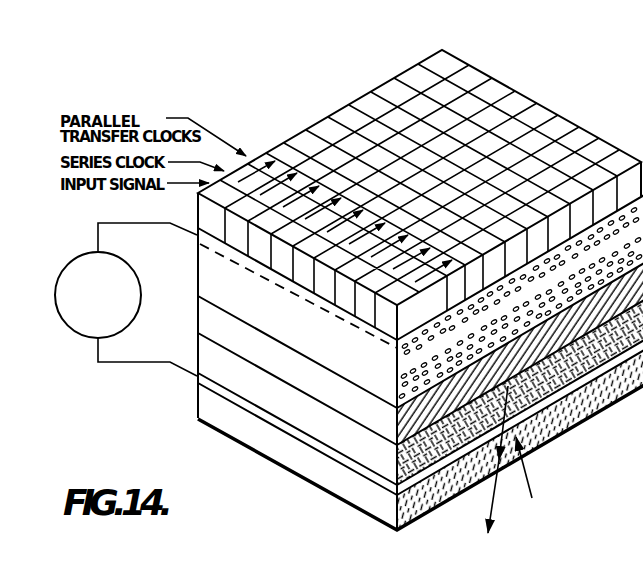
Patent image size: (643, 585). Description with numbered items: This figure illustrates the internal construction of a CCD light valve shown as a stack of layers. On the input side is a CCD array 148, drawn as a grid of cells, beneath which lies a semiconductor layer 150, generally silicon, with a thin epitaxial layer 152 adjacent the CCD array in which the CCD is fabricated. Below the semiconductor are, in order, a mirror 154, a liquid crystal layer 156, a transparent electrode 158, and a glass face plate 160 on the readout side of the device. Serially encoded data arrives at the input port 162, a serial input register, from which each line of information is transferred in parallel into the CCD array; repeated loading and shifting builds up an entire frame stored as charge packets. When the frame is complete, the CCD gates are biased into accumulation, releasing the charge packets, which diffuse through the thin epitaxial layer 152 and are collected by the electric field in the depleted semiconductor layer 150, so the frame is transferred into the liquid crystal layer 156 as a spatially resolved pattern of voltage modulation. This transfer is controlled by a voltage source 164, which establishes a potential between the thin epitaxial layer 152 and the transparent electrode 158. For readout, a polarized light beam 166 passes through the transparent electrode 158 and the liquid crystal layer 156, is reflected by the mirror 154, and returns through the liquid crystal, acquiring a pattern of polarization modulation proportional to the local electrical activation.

The CCD array 148 is at (244, 84).
The semiconductor layer 150 is at (208, 275).
The thin epitaxial layer 152 is at (197, 231).
The mirror 154 is at (208, 321).
The liquid crystal layer 156 is at (197, 355).
The transparent electrode 158 is at (197, 378).
The glass face plate 160 is at (430, 512).
The input port 162 is at (197, 197).
The voltage source 164 is at (76, 257).
The polarized light beam 166 is at (530, 486).